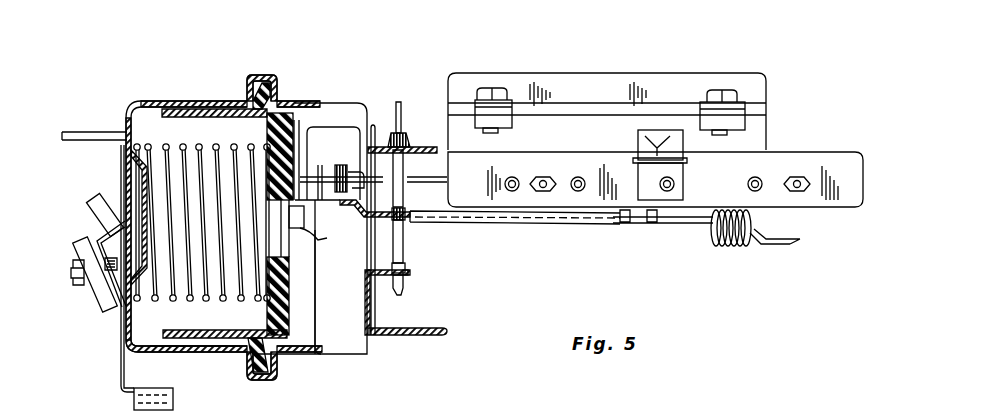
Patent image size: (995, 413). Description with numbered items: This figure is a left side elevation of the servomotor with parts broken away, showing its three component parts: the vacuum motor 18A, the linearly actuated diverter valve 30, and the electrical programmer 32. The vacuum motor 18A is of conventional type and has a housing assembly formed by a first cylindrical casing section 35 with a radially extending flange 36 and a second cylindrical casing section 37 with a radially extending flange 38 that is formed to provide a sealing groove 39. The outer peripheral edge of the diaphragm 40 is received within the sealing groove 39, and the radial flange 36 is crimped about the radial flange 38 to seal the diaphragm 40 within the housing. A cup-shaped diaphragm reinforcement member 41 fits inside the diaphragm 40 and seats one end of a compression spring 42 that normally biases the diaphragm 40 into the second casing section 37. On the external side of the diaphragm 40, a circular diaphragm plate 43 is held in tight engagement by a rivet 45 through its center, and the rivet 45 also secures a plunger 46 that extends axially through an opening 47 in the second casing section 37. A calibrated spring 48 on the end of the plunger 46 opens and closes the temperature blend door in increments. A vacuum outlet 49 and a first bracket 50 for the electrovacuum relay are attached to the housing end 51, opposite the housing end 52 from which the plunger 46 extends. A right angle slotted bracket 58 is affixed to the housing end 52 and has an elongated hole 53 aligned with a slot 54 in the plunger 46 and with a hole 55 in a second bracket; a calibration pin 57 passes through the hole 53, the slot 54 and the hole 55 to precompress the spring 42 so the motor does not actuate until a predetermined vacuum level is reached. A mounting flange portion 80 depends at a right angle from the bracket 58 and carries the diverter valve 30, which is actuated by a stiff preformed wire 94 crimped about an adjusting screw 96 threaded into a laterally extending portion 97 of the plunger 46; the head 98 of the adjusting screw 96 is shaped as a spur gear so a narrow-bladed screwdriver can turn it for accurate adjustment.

The vacuum motor 18A is at (150, 94).
The linearly actuated diverter valve 30 is at (645, 198).
The electrical programmer 32 is at (578, 76).
The first cylindrical casing section 35 is at (207, 351).
The radial flange 36 is at (248, 88).
The second cylindrical casing section 37 is at (300, 150).
The radial flange 38 is at (265, 75).
The sealing groove 39 is at (278, 362).
The diaphragm 40 is at (288, 328).
The diaphragm reinforcement member 41 is at (207, 330).
The compression spring 42 is at (152, 138).
The diaphragm plate 43 is at (288, 263).
The rivet 45 is at (327, 235).
The plunger 46 is at (473, 222).
The opening 47 is at (372, 125).
The calibrated spring 48 is at (723, 247).
The vacuum outlet 49 is at (73, 133).
The first bracket 50 is at (120, 383).
The end of motor housing casing 51 is at (127, 176).
The housing end 52 is at (368, 346).
The elongated hole 53 is at (402, 122).
The slot 54 is at (406, 226).
The hole 55 is at (408, 287).
The calibration pin 57 is at (408, 263).
The right angle slotted bracket 58 is at (428, 147).
The mounting flange portion 80 is at (835, 158).
The preformed wire 94 is at (427, 178).
The adjusting screw 96 is at (340, 165).
The laterally extending portion 97 is at (312, 158).
The head of adjusting screw 98 is at (358, 206).